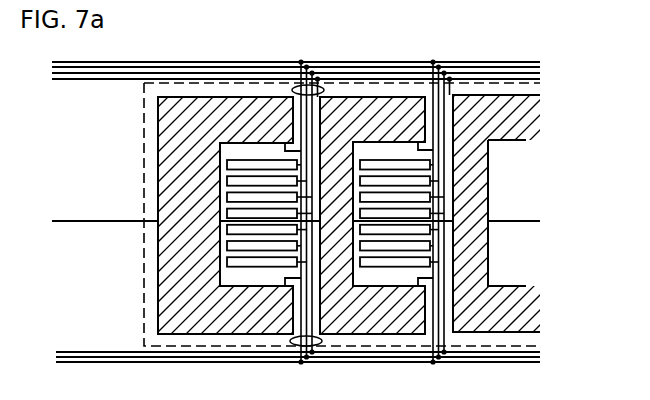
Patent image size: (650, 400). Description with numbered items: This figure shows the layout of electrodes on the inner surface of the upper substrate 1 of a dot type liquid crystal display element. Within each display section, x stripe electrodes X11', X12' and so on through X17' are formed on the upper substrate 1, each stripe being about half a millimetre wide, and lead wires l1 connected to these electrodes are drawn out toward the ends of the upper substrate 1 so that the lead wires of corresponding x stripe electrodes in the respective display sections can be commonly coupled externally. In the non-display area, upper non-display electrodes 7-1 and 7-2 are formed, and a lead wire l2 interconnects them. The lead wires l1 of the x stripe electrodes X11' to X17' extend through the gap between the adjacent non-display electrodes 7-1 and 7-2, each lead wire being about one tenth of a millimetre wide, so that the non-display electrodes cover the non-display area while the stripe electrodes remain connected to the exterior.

The upper substrate 1 is at (143, 126).
The upper non-display electrode 7-1 is at (212, 103).
The upper non-display electrode 7-2 is at (369, 103).
The lead wire l1 is at (326, 86).
The lead wire l2 is at (517, 220).
The x stripe electrode X11' is at (319, 158).
The x stripe electrode X12' is at (274, 184).
The x stripe electrode X17' is at (319, 271).